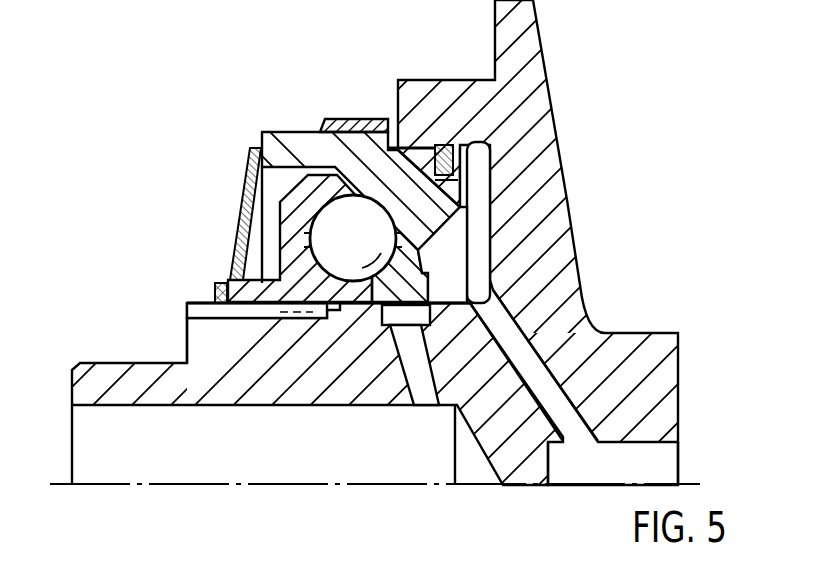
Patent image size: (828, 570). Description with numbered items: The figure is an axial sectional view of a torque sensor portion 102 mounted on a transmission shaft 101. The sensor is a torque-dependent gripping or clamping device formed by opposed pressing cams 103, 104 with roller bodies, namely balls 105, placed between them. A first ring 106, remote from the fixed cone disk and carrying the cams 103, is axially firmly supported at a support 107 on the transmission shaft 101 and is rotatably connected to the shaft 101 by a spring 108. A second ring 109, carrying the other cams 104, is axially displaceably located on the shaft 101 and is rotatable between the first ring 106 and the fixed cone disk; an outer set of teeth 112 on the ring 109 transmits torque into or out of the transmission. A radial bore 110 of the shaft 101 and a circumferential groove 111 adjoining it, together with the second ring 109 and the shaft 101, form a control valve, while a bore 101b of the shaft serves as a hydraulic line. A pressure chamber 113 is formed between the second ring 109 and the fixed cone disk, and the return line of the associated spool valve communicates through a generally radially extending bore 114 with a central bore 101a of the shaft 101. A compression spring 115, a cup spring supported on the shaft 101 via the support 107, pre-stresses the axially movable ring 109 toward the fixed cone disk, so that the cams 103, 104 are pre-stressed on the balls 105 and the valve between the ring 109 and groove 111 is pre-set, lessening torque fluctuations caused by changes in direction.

The transmission shaft 101 is at (130, 384).
The central bore 101a is at (673, 456).
The bore 101b is at (190, 460).
The torque sensor portion 102 is at (401, 285).
The pressing cams 103 is at (325, 306).
The pressing cams 104 is at (366, 306).
The balls 105 is at (328, 223).
The first ring 106 is at (530, 85).
The support 107 is at (205, 326).
The spring 108 is at (264, 310).
The second ring 109 is at (467, 165).
The radial bore 110 is at (423, 383).
The circumferential groove 111 is at (403, 303).
The outer set of teeth 112 is at (358, 121).
The pressure chamber 113 is at (457, 228).
The radially extending bore 114 is at (513, 333).
The compression spring 115 is at (242, 252).